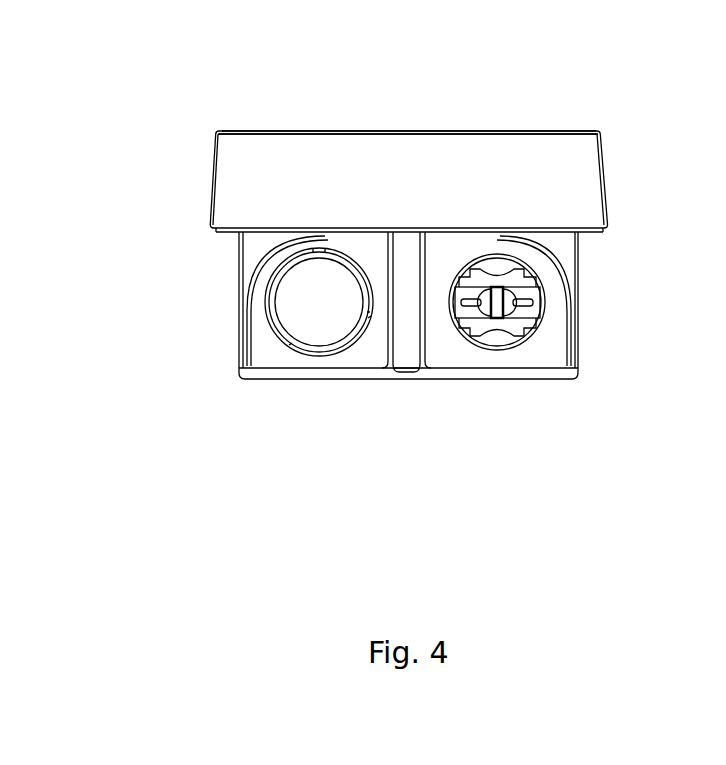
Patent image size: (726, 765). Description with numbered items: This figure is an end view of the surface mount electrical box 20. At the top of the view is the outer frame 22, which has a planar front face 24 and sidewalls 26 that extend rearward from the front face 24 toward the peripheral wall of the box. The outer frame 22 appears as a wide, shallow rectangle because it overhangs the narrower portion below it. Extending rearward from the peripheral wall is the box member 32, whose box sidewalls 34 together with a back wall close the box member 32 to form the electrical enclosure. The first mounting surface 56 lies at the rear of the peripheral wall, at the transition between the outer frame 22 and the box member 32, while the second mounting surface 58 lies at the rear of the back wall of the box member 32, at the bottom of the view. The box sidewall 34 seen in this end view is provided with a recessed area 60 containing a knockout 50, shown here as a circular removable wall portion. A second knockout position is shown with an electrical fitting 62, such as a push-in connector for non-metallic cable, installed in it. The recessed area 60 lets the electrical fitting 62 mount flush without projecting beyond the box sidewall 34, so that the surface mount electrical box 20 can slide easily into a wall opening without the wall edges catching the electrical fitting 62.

The surface mount electrical box 20 is at (215, 91).
The outer frame 22 is at (607, 182).
The planar front face 24 is at (409, 130).
The sidewalls 26 is at (421, 193).
The box member 32 is at (257, 380).
The box sidewalls 34 is at (563, 243).
The knockout 50 is at (331, 312).
The first mounting surface 56 is at (228, 231).
The second mounting surface 58 is at (362, 380).
The recessed area 60 is at (545, 355).
The electrical fitting 62 is at (525, 317).